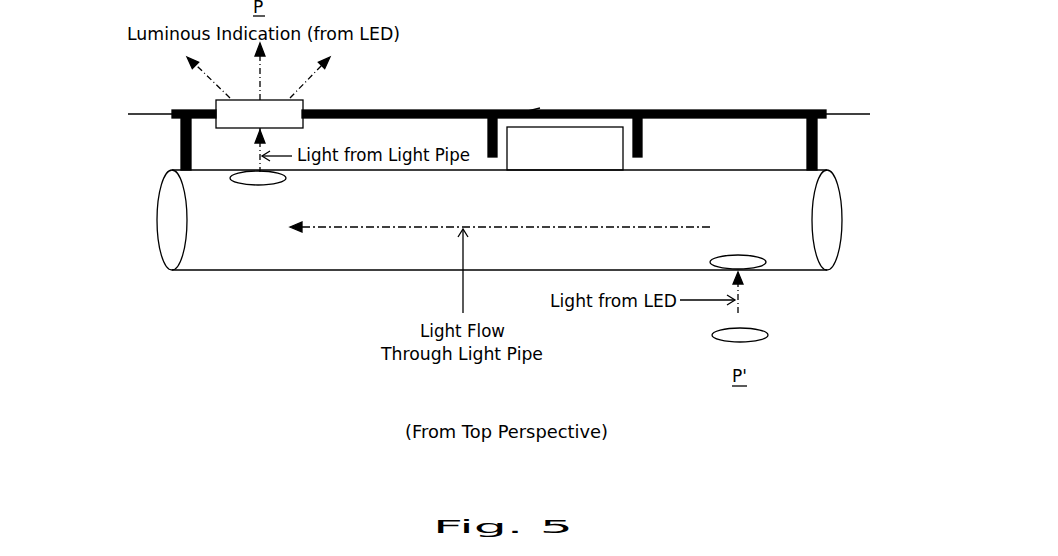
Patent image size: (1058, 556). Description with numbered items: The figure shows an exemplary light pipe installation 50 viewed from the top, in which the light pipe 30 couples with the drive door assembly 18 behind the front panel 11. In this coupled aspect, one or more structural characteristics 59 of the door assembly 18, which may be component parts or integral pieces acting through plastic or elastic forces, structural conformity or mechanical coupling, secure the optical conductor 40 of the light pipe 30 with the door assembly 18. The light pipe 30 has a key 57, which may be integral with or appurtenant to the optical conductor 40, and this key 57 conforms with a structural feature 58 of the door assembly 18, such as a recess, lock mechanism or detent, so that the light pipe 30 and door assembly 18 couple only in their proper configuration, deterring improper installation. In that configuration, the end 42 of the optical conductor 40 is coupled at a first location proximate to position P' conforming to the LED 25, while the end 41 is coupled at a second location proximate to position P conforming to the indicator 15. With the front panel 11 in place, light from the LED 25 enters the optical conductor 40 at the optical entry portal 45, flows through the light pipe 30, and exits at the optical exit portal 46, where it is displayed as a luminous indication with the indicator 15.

The front panel 11 is at (157, 112).
The indicator 15 is at (304, 112).
The drive door assembly 18 is at (509, 110).
The LED 25 is at (721, 336).
The light pipe 30 is at (499, 288).
The optical conductor 40 is at (499, 220).
The end 41 is at (183, 230).
The end 42 is at (838, 226).
The optical entry portal 45 is at (749, 263).
The optical exit portal 46 is at (247, 183).
The light pipe installation 50 is at (872, 40).
The key 57 is at (600, 156).
The structural feature 58 is at (540, 108).
The structural characteristic 59 is at (180, 143).